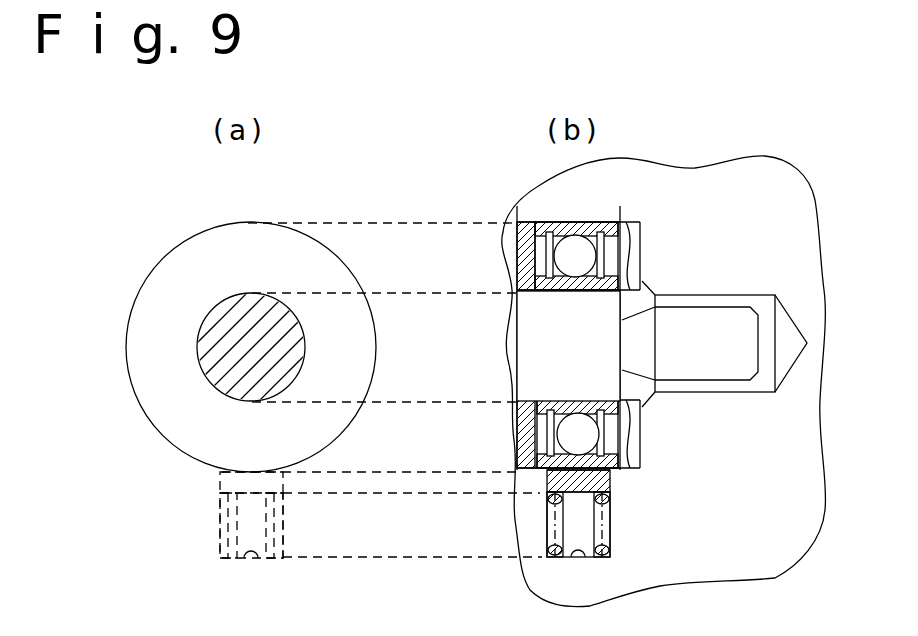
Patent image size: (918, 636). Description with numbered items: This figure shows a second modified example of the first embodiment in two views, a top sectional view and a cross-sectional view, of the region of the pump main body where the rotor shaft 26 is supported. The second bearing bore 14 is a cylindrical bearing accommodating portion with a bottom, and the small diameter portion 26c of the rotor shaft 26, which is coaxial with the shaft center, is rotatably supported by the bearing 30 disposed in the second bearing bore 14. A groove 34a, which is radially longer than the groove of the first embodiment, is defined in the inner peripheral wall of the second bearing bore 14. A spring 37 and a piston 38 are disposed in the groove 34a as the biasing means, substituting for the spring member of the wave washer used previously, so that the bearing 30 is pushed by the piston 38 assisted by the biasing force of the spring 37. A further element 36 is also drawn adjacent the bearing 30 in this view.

The second bearing bore 14 is at (137, 288).
The small diameter portion 26c is at (207, 352).
The rotor shaft 26 is at (727, 383).
The wave washer 36 is at (637, 449).
The bearing 30 is at (612, 475).
The piston 38 is at (218, 489).
The spring 37 is at (218, 557).
The groove 34a is at (259, 565).